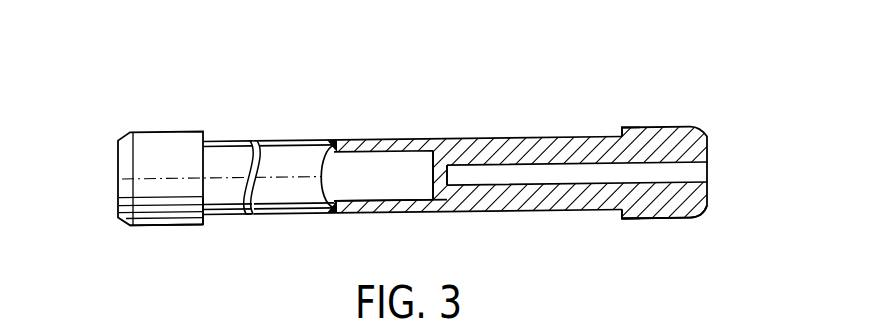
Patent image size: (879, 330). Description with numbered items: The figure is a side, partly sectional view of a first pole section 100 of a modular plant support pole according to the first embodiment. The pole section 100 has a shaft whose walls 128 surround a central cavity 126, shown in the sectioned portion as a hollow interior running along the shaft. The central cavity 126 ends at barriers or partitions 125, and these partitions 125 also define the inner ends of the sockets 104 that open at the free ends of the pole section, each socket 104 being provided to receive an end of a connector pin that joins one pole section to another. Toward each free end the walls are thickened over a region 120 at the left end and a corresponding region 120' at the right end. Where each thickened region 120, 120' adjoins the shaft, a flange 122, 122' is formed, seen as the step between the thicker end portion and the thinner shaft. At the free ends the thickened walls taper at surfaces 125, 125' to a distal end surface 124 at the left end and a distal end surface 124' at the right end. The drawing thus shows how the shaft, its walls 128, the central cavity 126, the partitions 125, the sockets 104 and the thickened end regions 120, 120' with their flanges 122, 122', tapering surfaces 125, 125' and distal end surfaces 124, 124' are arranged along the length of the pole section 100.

The first pole section 100 is at (295, 139).
The socket 104 is at (692, 173).
The thickened region 120 is at (166, 248).
The thickened region 120' is at (638, 240).
The flange 122 is at (235, 203).
The flange 122' is at (596, 154).
The distal end surface 124 is at (119, 178).
The distal end surface 124' is at (687, 152).
The partition / tapering surface 125 is at (276, 173).
The tapering surface 125' is at (733, 227).
The central cavity 126 is at (408, 185).
The walls 128 is at (362, 206).